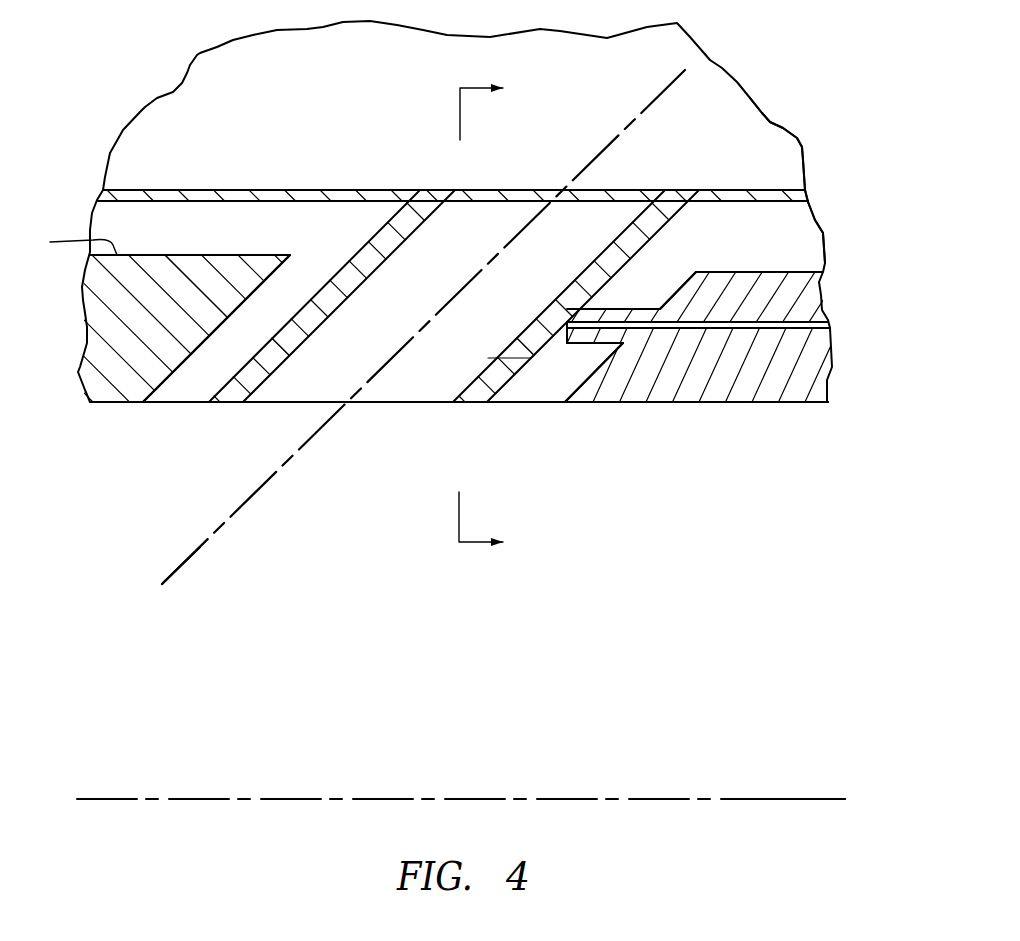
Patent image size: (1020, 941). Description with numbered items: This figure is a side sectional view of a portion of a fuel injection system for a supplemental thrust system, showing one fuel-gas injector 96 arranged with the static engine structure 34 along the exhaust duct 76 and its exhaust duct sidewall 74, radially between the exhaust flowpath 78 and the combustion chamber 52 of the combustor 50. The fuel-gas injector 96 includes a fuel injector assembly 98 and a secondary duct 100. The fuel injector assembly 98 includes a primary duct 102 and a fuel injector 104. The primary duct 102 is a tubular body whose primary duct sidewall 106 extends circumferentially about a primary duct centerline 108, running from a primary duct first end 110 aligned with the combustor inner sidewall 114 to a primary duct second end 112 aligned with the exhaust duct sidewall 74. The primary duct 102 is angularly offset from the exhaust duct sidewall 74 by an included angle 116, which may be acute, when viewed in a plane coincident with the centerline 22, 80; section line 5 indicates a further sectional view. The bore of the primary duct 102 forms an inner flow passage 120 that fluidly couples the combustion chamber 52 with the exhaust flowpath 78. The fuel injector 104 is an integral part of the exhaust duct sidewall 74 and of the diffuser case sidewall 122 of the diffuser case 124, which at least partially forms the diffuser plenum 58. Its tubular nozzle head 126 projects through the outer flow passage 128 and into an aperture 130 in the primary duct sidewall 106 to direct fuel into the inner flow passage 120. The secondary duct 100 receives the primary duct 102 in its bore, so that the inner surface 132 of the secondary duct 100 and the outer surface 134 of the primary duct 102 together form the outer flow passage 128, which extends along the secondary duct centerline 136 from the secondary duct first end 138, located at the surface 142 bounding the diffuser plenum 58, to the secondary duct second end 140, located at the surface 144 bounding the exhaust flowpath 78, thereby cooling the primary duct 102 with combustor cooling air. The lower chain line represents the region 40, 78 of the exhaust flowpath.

The combustion chamber 52 is at (318, 87).
The diffuser plenum 58 is at (461, 209).
The exhaust duct 76 is at (452, 324).
The secondary duct 100 is at (459, 456).
The exhaust duct sidewall 74 is at (439, 435).
The diffuser case 124 is at (461, 330).
The diffuser case sidewall 122 is at (460, 273).
The surface of the static engine structure 142 is at (220, 195).
The primary duct sidewall 106 is at (332, 275).
The primary duct first end 110 is at (584, 253).
The primary duct 102 is at (423, 327).
The section view indicator 5 is at (491, 316).
The combustor inner sidewall 114 is at (781, 129).
The combustor 50 is at (833, 189).
The outer flow passage 128 is at (448, 272).
The secondary duct first end 138 is at (757, 240).
The inner surface of the secondary duct 132 is at (227, 328).
The outer surface of the primary duct 134 is at (303, 357).
The inner flow passage 120 is at (433, 299).
The aperture 130 is at (469, 347).
The primary duct second end 112 is at (442, 442).
The secondary duct second end 140 is at (545, 451).
The nozzle head 126 is at (604, 400).
The fuel injector 104 is at (631, 400).
The surface of the static engine structure 144 is at (720, 446).
The static engine structure 34 is at (794, 458).
The included angle 116 is at (129, 487).
The fuel injector assembly 98 is at (202, 456).
The fuel-gas injector 96 is at (350, 503).
The primary duct centerline 108 is at (226, 596).
The secondary duct centerline 136 is at (226, 596).
The lower component 40 is at (461, 715).
The exhaust flowpath 78 is at (627, 660).
The centerline 22 is at (819, 749).
The centerline 80 is at (819, 749).